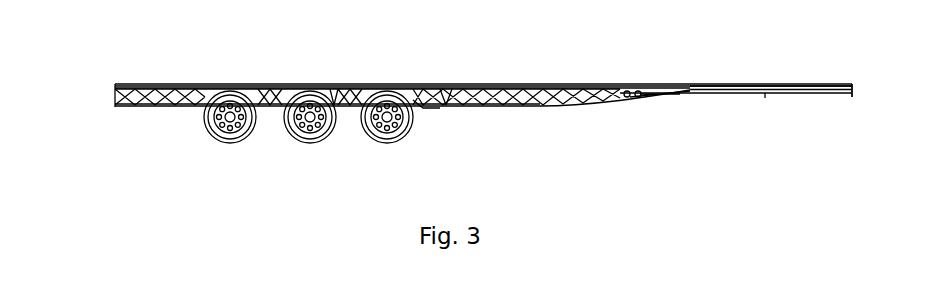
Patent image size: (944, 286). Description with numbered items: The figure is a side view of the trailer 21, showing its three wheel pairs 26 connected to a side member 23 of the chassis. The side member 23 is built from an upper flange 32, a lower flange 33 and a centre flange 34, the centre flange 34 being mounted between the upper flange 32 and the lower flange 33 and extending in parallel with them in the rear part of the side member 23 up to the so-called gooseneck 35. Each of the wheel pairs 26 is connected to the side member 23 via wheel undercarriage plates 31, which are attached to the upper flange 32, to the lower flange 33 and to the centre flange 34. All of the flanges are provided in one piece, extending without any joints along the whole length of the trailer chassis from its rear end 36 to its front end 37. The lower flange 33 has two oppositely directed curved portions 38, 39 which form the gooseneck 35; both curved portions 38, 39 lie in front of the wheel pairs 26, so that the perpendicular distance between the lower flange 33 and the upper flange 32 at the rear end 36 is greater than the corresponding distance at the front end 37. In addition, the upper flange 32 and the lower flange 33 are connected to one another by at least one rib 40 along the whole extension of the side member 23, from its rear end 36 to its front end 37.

The trailer 21 is at (272, 80).
The side member 23 is at (542, 80).
The wheel pairs 26 is at (374, 139).
The wheel undercarriage plates 31 is at (337, 87).
The upper flange 32 is at (443, 88).
The lower flange 33 is at (440, 109).
The centre flange 34 is at (478, 88).
The gooseneck 35 is at (652, 108).
The rear end 36 is at (118, 86).
The front end 37 is at (851, 85).
The curved portion 38 is at (596, 106).
The curved portion 39 is at (680, 97).
The rib 40 is at (108, 96).